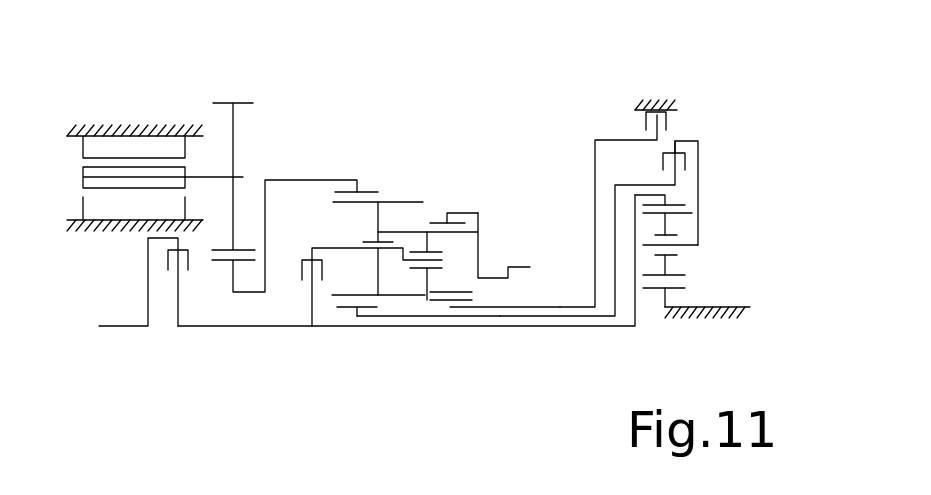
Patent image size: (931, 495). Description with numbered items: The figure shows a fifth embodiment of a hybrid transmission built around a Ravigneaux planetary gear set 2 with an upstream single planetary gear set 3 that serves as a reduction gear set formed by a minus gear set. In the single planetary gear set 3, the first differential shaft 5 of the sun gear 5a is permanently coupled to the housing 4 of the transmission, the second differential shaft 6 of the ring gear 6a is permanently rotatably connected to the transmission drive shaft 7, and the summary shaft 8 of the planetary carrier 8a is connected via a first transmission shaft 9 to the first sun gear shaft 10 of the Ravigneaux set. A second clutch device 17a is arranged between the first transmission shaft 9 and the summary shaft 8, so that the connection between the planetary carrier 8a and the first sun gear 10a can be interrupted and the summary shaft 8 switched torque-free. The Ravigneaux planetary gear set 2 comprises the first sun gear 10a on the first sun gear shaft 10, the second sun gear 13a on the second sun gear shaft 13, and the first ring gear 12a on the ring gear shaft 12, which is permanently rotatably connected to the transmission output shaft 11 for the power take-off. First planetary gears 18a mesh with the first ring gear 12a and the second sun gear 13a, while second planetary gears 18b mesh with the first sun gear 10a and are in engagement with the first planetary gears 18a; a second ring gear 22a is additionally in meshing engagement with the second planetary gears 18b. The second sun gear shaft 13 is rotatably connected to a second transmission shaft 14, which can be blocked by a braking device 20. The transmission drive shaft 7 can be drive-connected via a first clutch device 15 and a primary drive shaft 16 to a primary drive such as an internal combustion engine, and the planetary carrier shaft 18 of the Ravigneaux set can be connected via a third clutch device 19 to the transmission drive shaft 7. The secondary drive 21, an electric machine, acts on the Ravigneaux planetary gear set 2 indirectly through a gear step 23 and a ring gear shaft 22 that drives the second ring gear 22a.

The Ravigneaux planetary gear set 2 is at (462, 252).
The single planetary gear set 3 is at (680, 216).
The housing 4 is at (643, 102).
The first differential shaft 5 is at (673, 312).
The sun gear 5a is at (672, 291).
The second differential shaft 6 is at (640, 192).
The ring gear 6a is at (666, 203).
The transmission drive shaft 7 is at (528, 325).
The summary shaft 8 is at (700, 236).
The planetary carrier 8a is at (694, 252).
The first transmission shaft 9 is at (585, 318).
The first sun gear shaft 10 is at (357, 312).
The first sun gear 10a is at (347, 307).
The transmission output shaft 11 is at (478, 218).
The ring gear shaft 12 is at (447, 218).
The first ring gear 12a is at (460, 217).
The second sun gear shaft 13 is at (457, 307).
The second sun gear 13a is at (440, 300).
The second transmission shaft 14 is at (575, 305).
The first clutch device 15 is at (182, 263).
The primary drive shaft 16 is at (135, 328).
The second clutch device 17a is at (686, 157).
The planetary carrier shaft 18 is at (363, 245).
The first planetary gears 18a is at (453, 291).
The second planetary gears 18b is at (363, 295).
The third clutch device 19 is at (303, 259).
The braking device 20 is at (668, 125).
The secondary drive 21 is at (133, 128).
The ring gear shaft 22 is at (333, 180).
The second ring gear 22a is at (358, 192).
The gear step 23 is at (224, 238).